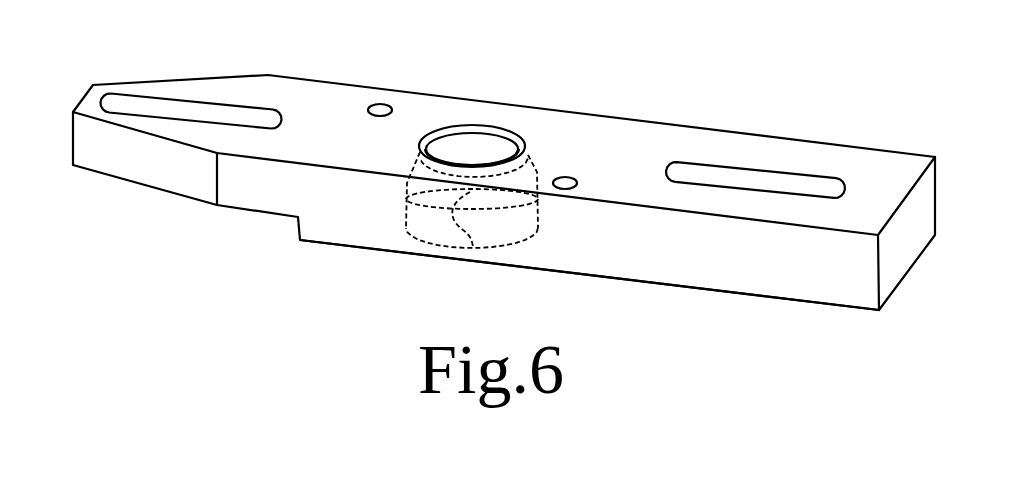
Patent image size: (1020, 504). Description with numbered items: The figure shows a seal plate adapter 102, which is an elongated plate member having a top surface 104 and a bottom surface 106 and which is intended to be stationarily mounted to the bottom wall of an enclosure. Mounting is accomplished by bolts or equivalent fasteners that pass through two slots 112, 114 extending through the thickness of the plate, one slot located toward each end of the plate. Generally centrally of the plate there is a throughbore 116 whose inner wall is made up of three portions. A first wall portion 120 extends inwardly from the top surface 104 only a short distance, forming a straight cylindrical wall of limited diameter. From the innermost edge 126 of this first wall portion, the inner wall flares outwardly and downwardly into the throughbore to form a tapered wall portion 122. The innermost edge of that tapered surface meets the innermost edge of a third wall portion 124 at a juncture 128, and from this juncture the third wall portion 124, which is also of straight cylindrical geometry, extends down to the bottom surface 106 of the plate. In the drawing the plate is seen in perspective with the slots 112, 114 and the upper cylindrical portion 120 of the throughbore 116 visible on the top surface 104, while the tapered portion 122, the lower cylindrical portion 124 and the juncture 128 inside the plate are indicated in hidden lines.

The seal plate adapter 102 is at (685, 122).
The top surface 104 is at (627, 160).
The bottom surface 106 is at (698, 290).
The slot 112 is at (220, 112).
The slot 114 is at (762, 182).
The throughbore 116 is at (480, 157).
The first wall portion 120 is at (457, 127).
The tapered wall portion 122 is at (527, 160).
The third wall portion 124 is at (538, 197).
The innermost edge 126 is at (507, 140).
The juncture 128 is at (473, 248).